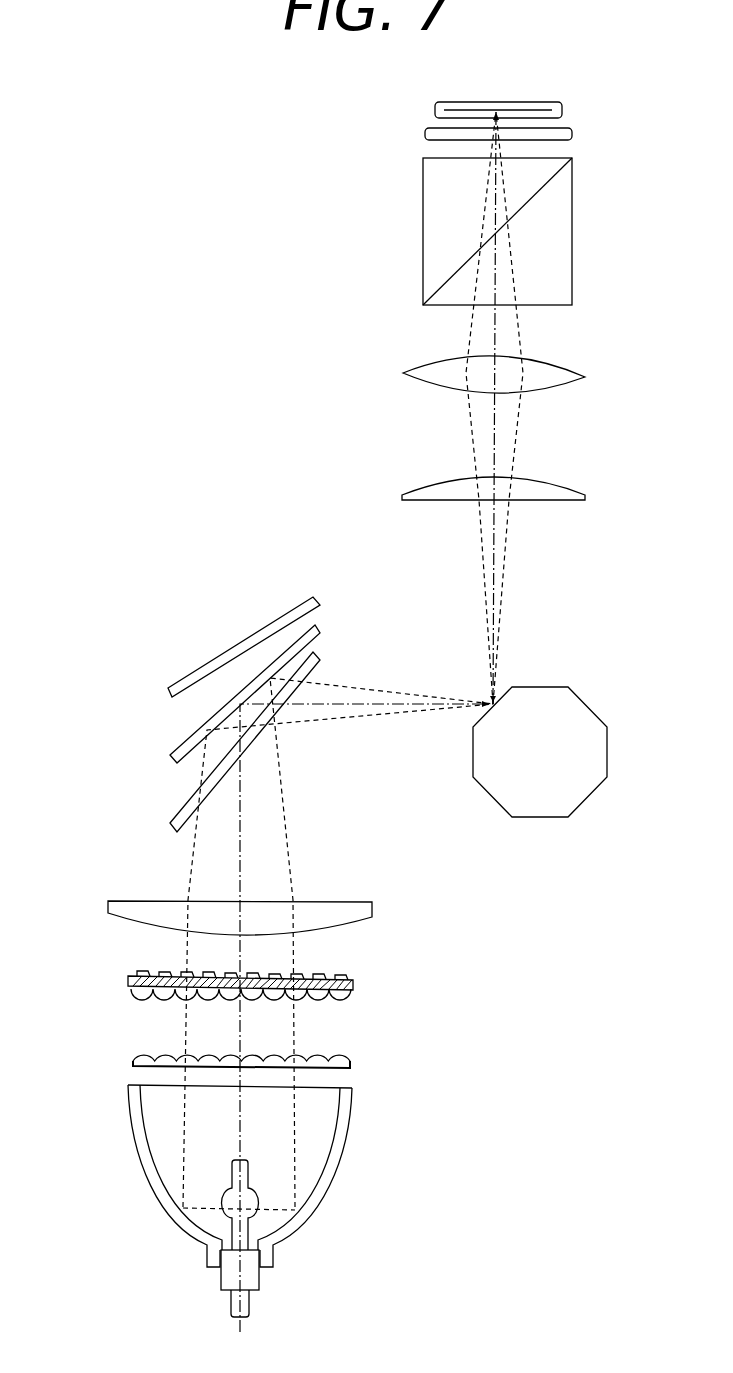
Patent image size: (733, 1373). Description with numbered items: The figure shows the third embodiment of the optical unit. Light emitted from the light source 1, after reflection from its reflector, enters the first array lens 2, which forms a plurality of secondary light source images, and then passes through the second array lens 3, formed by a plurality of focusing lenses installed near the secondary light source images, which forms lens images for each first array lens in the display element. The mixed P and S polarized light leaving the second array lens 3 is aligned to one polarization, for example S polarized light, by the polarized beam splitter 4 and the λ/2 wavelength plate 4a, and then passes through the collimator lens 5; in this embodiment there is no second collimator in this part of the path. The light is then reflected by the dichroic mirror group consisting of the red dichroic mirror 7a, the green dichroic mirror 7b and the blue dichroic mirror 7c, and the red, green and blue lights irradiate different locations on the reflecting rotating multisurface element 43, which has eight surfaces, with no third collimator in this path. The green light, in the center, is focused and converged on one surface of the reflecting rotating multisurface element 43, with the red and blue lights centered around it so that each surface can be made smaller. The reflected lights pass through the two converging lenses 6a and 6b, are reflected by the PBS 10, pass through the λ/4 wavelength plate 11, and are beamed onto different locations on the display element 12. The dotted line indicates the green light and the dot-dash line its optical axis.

The light source 1 is at (142, 1177).
The first array lens 2 is at (133, 1052).
The second array lens 3 is at (132, 995).
The polarized beam splitter 4 is at (128, 978).
The λ/2 wavelength plate 4a is at (138, 972).
The collimator lens 5 is at (108, 905).
The converging lens 6a is at (585, 495).
The converging lens 6b is at (585, 377).
The red dichroic mirror 7a is at (172, 823).
The green dichroic mirror 7b is at (172, 757).
The blue dichroic mirror 7c is at (170, 690).
The PBS 10 is at (567, 245).
The λ/4 wavelength plate 11 is at (572, 134).
The liquid crystal display element 12 is at (562, 110).
The reflecting rotating multisurface element 43 is at (585, 785).